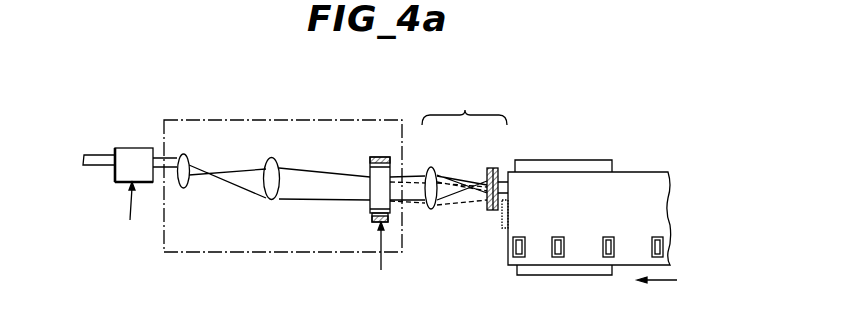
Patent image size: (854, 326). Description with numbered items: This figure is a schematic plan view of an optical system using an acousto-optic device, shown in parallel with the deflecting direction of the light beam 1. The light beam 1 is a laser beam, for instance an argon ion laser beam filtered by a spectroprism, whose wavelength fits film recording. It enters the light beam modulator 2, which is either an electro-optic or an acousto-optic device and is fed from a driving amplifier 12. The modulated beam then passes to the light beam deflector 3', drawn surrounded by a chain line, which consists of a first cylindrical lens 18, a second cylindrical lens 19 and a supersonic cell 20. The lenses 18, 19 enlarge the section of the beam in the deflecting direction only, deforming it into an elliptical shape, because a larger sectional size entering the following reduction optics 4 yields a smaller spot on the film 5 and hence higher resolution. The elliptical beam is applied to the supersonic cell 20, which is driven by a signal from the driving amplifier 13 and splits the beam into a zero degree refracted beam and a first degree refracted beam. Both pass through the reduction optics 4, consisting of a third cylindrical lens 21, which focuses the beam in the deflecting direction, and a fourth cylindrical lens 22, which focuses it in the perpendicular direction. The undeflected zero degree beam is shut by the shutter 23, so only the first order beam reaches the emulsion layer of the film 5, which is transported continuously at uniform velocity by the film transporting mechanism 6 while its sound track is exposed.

The light beam 1 is at (103, 152).
The light beam modulator 2 is at (133, 157).
The light beam deflector 3' is at (283, 167).
The reduction optics 4 is at (464, 100).
The film 5 is at (638, 180).
The film transporting mechanism 6 is at (580, 162).
The driving amplifier 12 is at (140, 237).
The driving amplifier 13 is at (409, 272).
The first cylindrical lens 18 is at (187, 153).
The second cylindrical lens 19 is at (277, 157).
The supersonic cell 20 is at (375, 157).
The third cylindrical lens 21 is at (428, 210).
The fourth cylindrical lens 22 is at (500, 168).
The shutter 23 is at (503, 218).